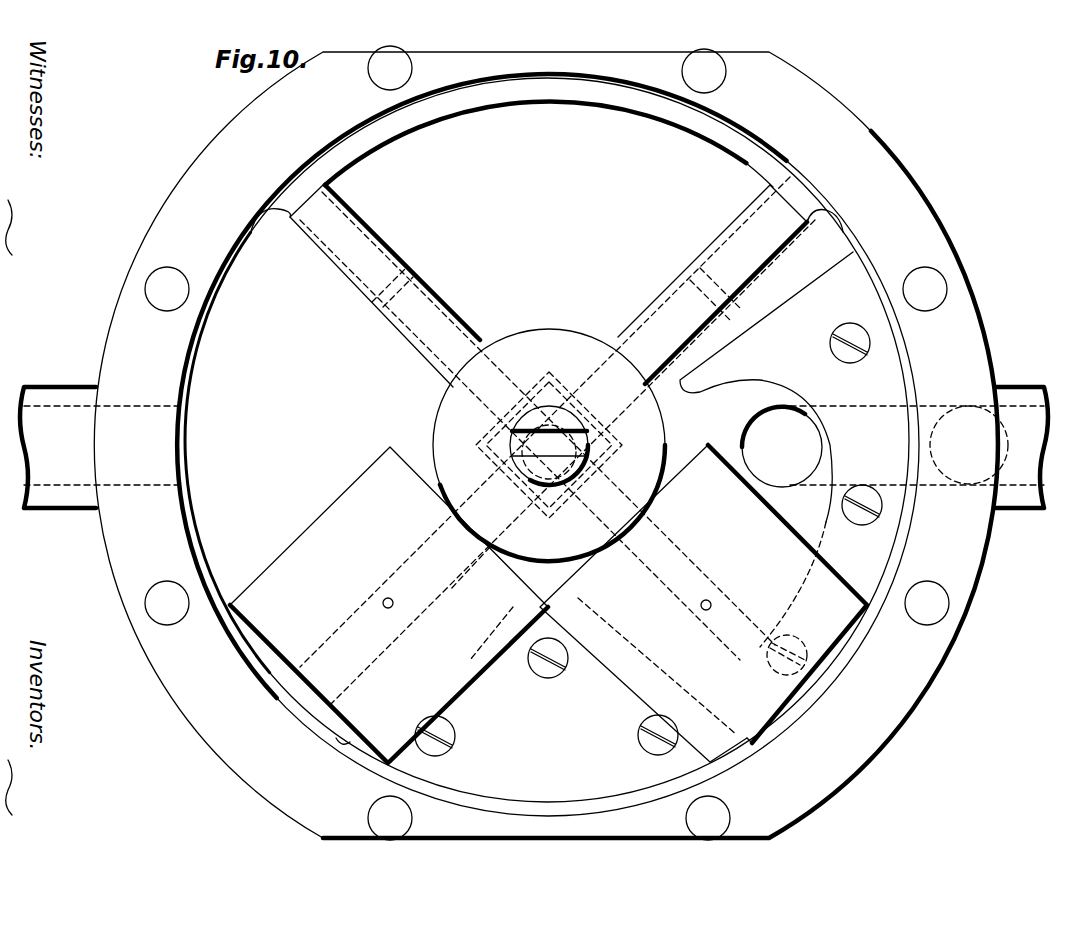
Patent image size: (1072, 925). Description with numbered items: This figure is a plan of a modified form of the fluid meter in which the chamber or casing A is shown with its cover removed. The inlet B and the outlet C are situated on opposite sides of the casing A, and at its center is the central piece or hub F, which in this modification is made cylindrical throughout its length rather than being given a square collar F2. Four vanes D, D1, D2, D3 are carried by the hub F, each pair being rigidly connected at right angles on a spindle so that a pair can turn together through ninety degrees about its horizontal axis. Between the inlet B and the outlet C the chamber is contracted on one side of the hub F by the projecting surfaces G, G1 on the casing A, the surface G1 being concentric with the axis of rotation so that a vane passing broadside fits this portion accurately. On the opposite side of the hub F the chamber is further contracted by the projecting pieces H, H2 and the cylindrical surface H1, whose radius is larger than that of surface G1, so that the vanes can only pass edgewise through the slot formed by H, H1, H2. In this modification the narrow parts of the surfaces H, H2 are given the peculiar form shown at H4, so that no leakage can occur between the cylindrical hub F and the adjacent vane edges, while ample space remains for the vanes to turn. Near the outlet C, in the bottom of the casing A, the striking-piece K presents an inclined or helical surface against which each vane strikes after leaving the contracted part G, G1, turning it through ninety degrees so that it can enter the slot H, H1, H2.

The chamber or casing A is at (552, 443).
The inlet B is at (100, 447).
The outlet C is at (895, 447).
The vane D is at (532, 426).
The vane D1 is at (557, 441).
The vane D2 is at (703, 603).
The vane D3 is at (389, 605).
The central piece or hub F is at (549, 445).
The square portion or collar F2 is at (549, 445).
The projecting surface G is at (547, 440).
The projecting surface G1 is at (722, 140).
The projecting piece H is at (648, 628).
The projecting surface H1 is at (470, 792).
The projecting piece H2 is at (478, 590).
The peculiarly formed part of surfaces H H2 H4 is at (578, 598).
The projection or striking-piece K is at (775, 449).